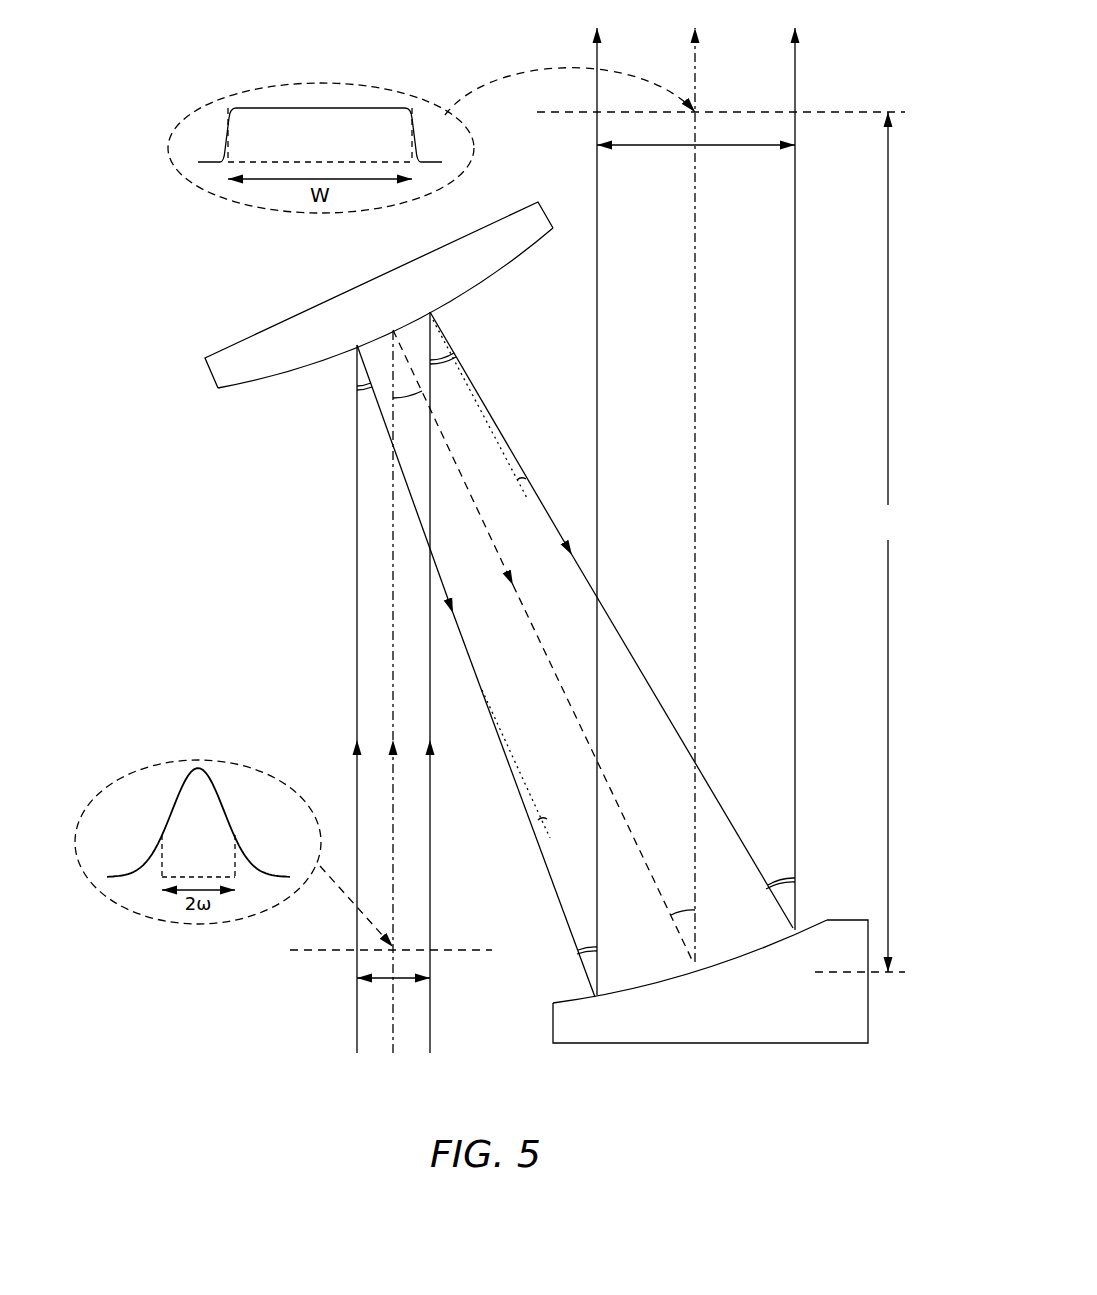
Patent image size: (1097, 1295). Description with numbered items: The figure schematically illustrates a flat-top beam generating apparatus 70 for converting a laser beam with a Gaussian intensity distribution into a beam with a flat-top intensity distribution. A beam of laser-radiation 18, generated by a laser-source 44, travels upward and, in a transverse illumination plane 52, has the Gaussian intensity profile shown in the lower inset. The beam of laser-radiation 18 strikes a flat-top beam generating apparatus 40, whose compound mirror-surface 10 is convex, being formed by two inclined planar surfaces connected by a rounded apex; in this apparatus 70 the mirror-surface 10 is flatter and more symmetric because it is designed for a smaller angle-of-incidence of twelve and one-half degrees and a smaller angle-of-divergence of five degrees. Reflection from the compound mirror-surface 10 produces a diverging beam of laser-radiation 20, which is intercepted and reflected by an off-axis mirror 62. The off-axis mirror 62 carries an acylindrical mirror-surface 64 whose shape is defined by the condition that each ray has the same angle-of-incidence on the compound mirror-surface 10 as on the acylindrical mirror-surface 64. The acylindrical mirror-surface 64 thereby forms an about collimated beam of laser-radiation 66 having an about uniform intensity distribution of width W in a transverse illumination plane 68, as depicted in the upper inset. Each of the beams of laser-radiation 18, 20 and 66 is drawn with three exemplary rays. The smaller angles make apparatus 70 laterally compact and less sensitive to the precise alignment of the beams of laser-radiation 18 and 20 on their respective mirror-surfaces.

The mirror-surface 10 is at (293, 372).
The beam of laser-radiation 18 is at (350, 665).
The beam of laser-radiation 20 is at (548, 883).
The flat-top beam generating apparatus 40 is at (242, 298).
The laser-source 44 is at (397, 1082).
The transverse illumination plane 52 is at (290, 951).
The off-axis mirror 62 is at (650, 1033).
The mirror-surface 64 is at (663, 987).
The beam of laser-radiation 66 is at (588, 315).
The transverse illumination plane 68 is at (847, 112).
The flat-top beam generating apparatus 70 is at (247, 1057).